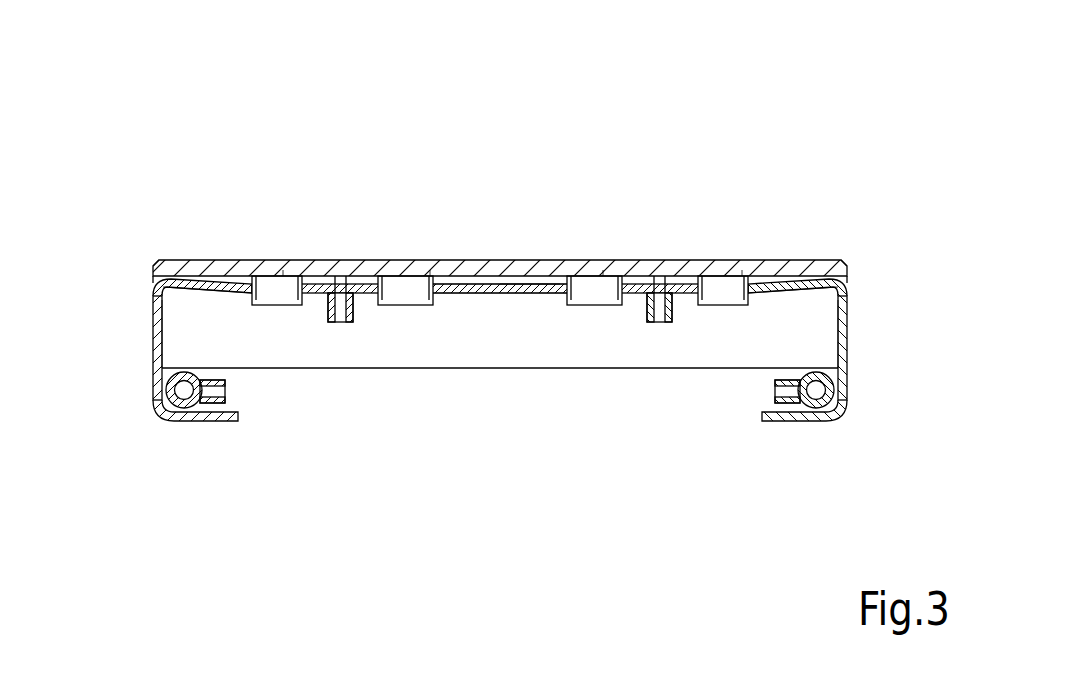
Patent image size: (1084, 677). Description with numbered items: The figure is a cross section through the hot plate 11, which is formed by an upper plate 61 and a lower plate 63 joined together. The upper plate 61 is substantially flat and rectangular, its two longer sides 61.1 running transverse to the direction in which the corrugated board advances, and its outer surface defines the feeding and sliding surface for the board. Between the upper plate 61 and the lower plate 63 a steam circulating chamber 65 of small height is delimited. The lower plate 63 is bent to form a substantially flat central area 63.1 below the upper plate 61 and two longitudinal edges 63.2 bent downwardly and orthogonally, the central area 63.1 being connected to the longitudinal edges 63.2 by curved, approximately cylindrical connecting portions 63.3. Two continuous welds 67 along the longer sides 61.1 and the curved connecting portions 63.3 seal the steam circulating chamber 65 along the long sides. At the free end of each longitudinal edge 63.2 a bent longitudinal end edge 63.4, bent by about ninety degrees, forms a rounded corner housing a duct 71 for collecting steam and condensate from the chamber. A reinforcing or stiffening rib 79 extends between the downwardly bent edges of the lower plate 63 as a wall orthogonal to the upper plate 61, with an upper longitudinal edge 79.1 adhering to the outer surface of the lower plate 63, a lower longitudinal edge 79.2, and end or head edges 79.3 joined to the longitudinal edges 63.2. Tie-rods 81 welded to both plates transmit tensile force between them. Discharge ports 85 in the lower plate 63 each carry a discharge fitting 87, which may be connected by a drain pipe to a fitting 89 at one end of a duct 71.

The hot plate 11 is at (135, 125).
The upper plate 61 is at (434, 254).
The longer sides 61.1 is at (153, 268).
The lower plate 63 is at (465, 304).
The substantially flat central area 63.1 is at (530, 282).
The longitudinal edges 63.2 is at (157, 367).
The curved connecting portions 63.3 is at (163, 280).
The bent longitudinal end edge 63.4 is at (187, 420).
The steam circulating chamber 65 is at (477, 283).
The continuous welds 67 is at (153, 276).
The duct 71 is at (153, 410).
The reinforcing or stiffening rib 79 is at (377, 325).
The upper longitudinal edge 79.1 is at (538, 293).
The lower longitudinal edge 79.2 is at (590, 368).
The end or head edges 79.3 is at (163, 312).
The tie-rod 81 is at (283, 275).
The discharge port 85 is at (323, 276).
The discharge fitting 87 is at (368, 276).
The fitting 89 is at (225, 388).